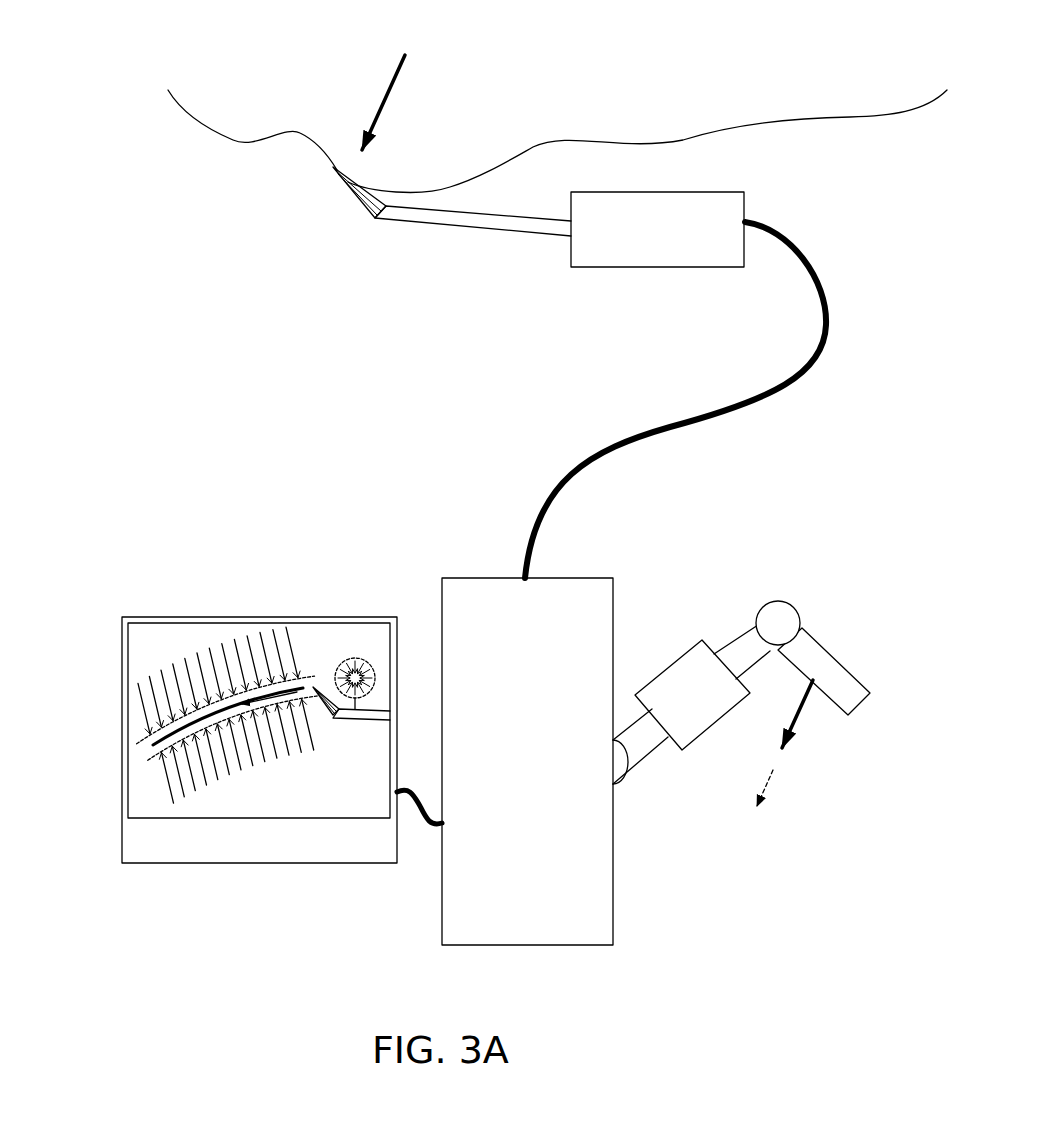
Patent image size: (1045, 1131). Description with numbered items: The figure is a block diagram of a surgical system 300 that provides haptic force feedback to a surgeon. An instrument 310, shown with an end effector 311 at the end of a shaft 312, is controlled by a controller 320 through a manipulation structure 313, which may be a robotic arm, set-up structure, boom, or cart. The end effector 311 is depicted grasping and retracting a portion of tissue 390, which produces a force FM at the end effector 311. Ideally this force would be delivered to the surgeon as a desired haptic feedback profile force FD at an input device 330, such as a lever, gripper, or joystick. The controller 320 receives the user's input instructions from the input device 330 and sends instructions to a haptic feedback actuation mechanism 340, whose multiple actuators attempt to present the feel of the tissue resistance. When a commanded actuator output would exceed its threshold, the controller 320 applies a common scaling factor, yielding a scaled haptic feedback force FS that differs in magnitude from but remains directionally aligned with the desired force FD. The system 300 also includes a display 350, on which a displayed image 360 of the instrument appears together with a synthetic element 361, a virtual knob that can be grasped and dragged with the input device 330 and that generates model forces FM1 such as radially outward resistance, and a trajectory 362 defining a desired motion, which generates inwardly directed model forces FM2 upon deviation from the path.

The surgical system 300 is at (157, 333).
The instrument 310 is at (407, 335).
The end effector 311 is at (362, 198).
The shaft 312 is at (532, 235).
The manipulation structure 313 is at (678, 267).
The controller 320 is at (613, 806).
The input device 330 is at (837, 657).
The haptic feedback actuation mechanism 340 is at (702, 640).
The display 350 is at (133, 852).
The displayed instrument image 360 is at (362, 722).
The synthetic element 361 is at (317, 633).
The trajectory 362 is at (175, 689).
The tissue 390 is at (650, 90).
The force FM is at (394, 88).
The model forces FM1 is at (378, 674).
The model forces FM2 is at (237, 660).
The scaled haptic feedback force FS is at (804, 721).
The haptic feedback profile force FD is at (760, 808).